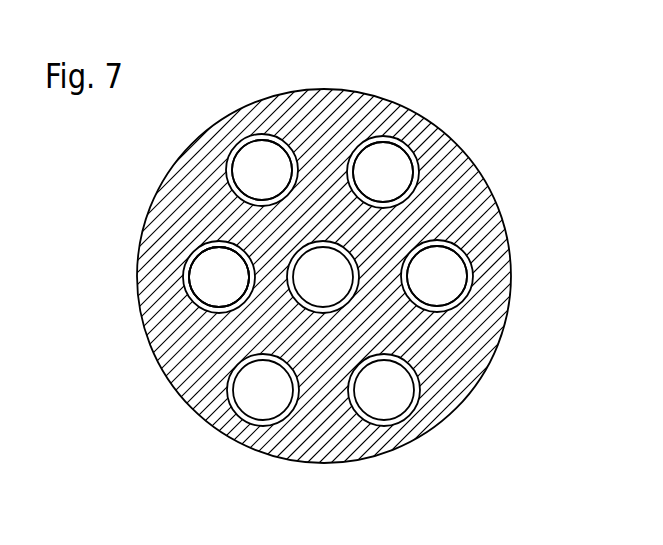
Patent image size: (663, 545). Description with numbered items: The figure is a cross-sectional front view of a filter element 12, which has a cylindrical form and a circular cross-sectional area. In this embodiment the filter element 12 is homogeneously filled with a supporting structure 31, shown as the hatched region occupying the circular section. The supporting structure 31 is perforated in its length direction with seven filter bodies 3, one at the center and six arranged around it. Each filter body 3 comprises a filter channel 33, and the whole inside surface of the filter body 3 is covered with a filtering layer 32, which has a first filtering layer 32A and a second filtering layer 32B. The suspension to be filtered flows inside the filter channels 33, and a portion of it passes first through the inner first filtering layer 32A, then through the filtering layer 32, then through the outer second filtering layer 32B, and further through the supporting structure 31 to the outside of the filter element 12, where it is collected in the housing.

The filter element 12 is at (511, 269).
The supporting structure 31 is at (203, 213).
The filter body 3 is at (318, 261).
The filtering layer 32 is at (229, 387).
The first filtering layer 32A is at (362, 166).
The second filtering layer 32B is at (272, 134).
The filter channel 33 is at (323, 282).